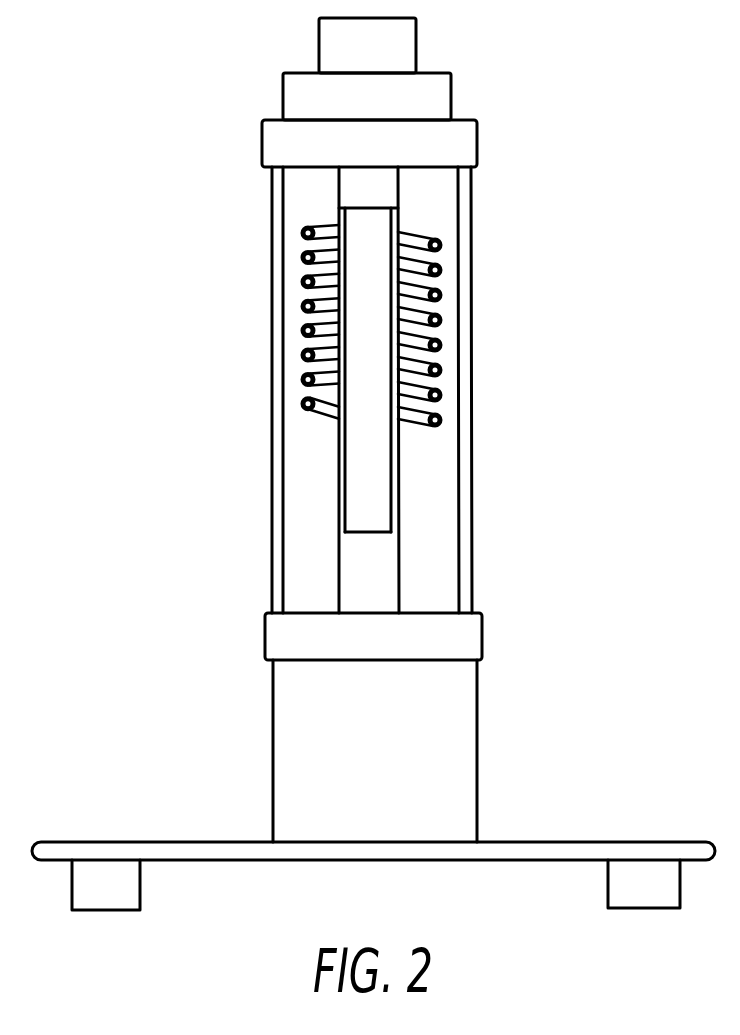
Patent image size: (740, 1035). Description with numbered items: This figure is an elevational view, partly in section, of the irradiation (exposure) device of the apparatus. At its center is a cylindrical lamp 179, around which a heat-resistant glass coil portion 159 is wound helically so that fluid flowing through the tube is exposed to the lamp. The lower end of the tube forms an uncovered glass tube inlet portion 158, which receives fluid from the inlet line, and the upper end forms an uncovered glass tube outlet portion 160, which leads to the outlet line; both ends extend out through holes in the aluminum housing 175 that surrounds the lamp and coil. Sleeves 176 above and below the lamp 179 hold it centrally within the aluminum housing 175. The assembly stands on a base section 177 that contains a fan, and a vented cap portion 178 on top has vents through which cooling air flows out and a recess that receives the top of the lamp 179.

The uncovered glass tube inlet portion 158 is at (369, 324).
The coil portion 159 is at (302, 375).
The uncovered glass tube outlet portion 160 is at (300, 232).
The aluminum housing 175 is at (466, 260).
The sleeves 176 is at (460, 147).
The base section 177 is at (452, 710).
The vented cap portion 178 is at (436, 101).
The cylindrical lamp 179 is at (380, 438).